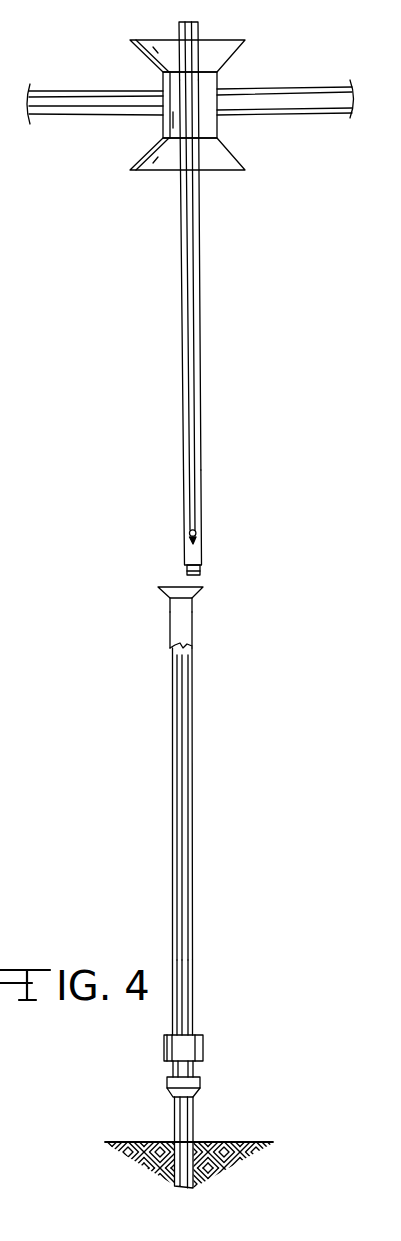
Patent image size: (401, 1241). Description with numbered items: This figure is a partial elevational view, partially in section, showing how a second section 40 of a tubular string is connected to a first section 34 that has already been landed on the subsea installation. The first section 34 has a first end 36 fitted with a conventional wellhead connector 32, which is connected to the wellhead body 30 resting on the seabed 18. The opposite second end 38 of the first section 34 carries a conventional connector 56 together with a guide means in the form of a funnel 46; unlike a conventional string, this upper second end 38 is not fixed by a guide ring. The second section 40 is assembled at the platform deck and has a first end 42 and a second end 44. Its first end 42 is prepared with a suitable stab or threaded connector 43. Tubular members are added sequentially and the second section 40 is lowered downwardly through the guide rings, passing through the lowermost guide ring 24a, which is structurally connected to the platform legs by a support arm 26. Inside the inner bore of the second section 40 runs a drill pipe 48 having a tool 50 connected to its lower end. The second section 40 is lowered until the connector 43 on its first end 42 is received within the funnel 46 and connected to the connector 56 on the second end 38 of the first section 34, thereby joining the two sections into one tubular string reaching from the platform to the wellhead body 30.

The seabed 18 is at (134, 1142).
The lowermost guide ring 24a is at (243, 46).
The support arm 26 is at (288, 114).
The wellhead body 30 is at (196, 1067).
The wellhead connector 32 is at (202, 1037).
The first section 34 is at (224, 918).
The first end 36 is at (194, 1005).
The second end 38 is at (174, 628).
The second section 40 is at (194, 289).
The first end 42 is at (184, 482).
The stab or threaded connector 43 is at (201, 565).
The second end 44 is at (200, 32).
The funnel 46 is at (197, 596).
The drill pipe 48 is at (193, 387).
The tool 50 is at (189, 538).
The connector 56 is at (170, 605).